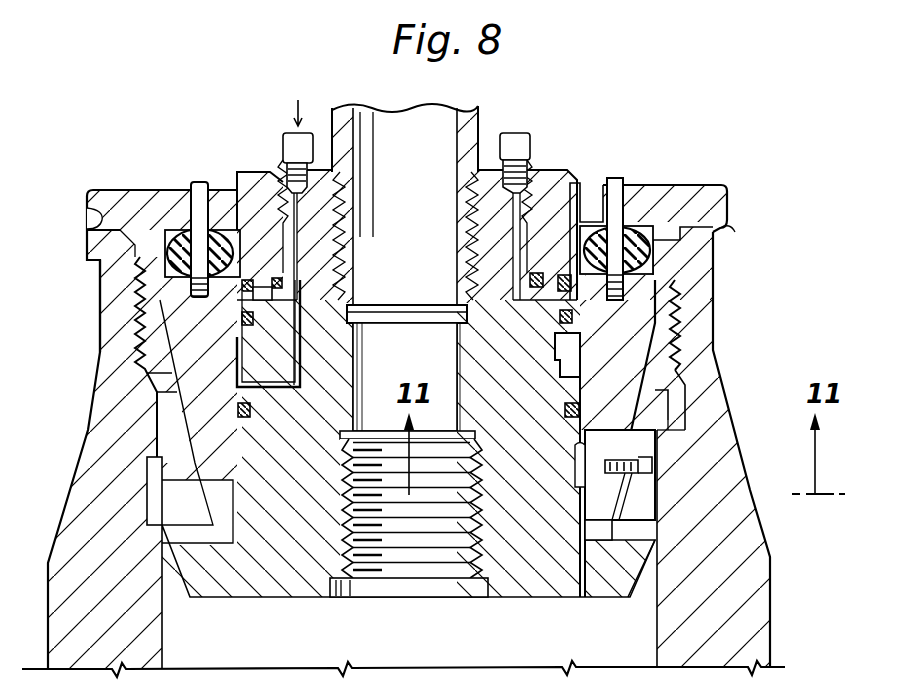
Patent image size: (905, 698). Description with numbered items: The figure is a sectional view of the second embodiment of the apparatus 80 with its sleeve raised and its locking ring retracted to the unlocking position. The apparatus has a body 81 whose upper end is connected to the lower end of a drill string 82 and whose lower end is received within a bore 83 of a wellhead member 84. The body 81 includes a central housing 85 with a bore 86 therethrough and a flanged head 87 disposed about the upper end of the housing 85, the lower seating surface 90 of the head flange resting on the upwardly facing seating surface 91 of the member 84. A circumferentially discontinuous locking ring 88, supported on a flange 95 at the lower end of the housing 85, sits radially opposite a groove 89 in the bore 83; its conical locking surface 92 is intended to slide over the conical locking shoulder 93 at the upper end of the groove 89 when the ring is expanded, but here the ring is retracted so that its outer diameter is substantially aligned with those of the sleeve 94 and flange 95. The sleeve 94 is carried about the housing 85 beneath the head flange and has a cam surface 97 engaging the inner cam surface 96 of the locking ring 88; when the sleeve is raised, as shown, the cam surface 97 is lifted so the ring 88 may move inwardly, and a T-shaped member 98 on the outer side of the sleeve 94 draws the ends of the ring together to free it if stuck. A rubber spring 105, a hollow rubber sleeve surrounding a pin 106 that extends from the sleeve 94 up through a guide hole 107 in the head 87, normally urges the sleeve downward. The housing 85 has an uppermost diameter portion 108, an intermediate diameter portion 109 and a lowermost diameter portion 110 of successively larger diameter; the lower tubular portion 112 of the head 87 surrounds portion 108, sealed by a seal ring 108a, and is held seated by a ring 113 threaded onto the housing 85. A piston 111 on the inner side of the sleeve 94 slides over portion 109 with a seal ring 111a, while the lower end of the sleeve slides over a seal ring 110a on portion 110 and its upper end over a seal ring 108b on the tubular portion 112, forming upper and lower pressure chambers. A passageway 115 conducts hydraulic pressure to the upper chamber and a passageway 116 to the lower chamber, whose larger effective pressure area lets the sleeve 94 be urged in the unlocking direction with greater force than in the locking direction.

The apparatus 80 is at (648, 174).
The body 81 is at (270, 172).
The drill string 82 is at (470, 108).
The bore 83 is at (657, 620).
The member 84 is at (98, 382).
The central housing 85 is at (620, 360).
The bore 86 is at (460, 343).
The flanged head 87 is at (113, 188).
The locking ring 88 is at (170, 478).
The groove 89 is at (670, 508).
The lower seating surface 90 is at (730, 232).
The seating surface 91 is at (90, 216).
The conical locking surface 92 is at (150, 456).
The conical locking shoulder 93 is at (645, 475).
The sleeve 94 is at (118, 296).
The flange 95 is at (100, 560).
The inner cam surface 96 is at (600, 490).
The cam surface 97 is at (625, 410).
The T-shaped member 98 is at (630, 458).
The rubber spring 105 is at (655, 240).
The pin 106 is at (617, 178).
The guide hole 107 is at (196, 180).
The uppermost diameter portion 108 is at (585, 215).
The seal ring 108a is at (560, 282).
The seal ring 108b is at (567, 238).
The intermediate diameter portion 109 is at (610, 338).
The lowermost diameter portion 110 is at (625, 435).
The seal ring 110a is at (625, 385).
The piston 111 is at (560, 300).
The seal ring 111a is at (242, 318).
The lower tubular portion 112 is at (575, 186).
The ring 113 is at (548, 175).
The passageway 115 is at (470, 300).
The passageway 116 is at (300, 372).